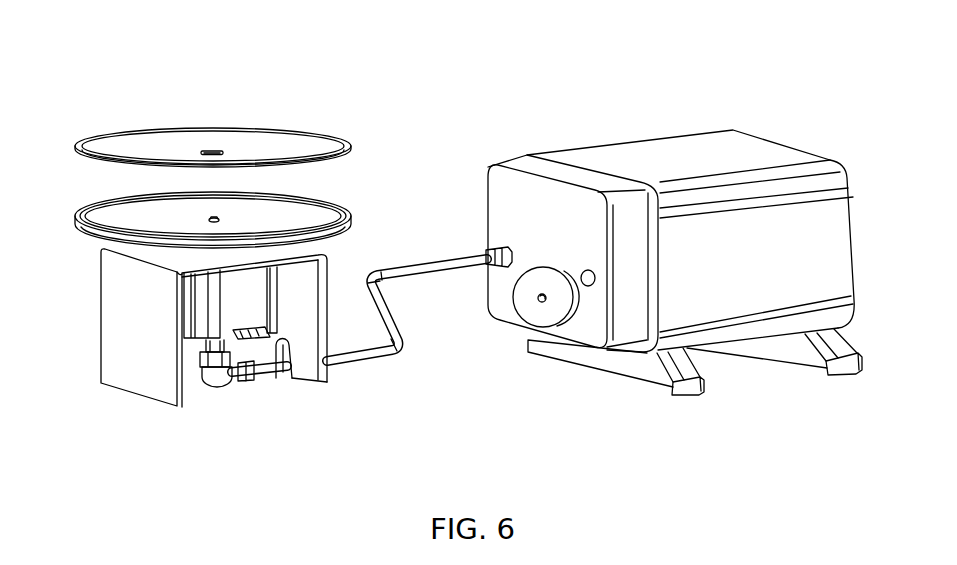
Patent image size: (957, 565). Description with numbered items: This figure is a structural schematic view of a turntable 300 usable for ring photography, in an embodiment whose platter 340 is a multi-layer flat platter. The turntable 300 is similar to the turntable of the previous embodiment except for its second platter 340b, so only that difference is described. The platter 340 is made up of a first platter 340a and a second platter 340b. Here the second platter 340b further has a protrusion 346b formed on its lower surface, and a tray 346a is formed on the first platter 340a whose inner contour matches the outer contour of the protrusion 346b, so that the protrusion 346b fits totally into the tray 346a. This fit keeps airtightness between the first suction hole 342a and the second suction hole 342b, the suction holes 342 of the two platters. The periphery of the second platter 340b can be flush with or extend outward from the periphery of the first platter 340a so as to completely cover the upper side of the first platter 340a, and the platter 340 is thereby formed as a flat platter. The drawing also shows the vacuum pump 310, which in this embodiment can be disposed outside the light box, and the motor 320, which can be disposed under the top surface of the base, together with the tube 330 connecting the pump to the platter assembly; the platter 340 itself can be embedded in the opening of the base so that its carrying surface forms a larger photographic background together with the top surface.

The turntable 300 is at (865, 420).
The vacuum pump 310 is at (840, 247).
The motor 320 is at (240, 302).
The supply tube 330 is at (345, 366).
The platter 340 is at (123, 67).
The first platter 340a is at (80, 213).
The second platter 340b is at (112, 132).
The openings 342 is at (308, 83).
The first suction hole 342a is at (213, 217).
The second suction hole 342b is at (213, 147).
The tray 346a is at (268, 214).
The protrusion 346b is at (332, 154).